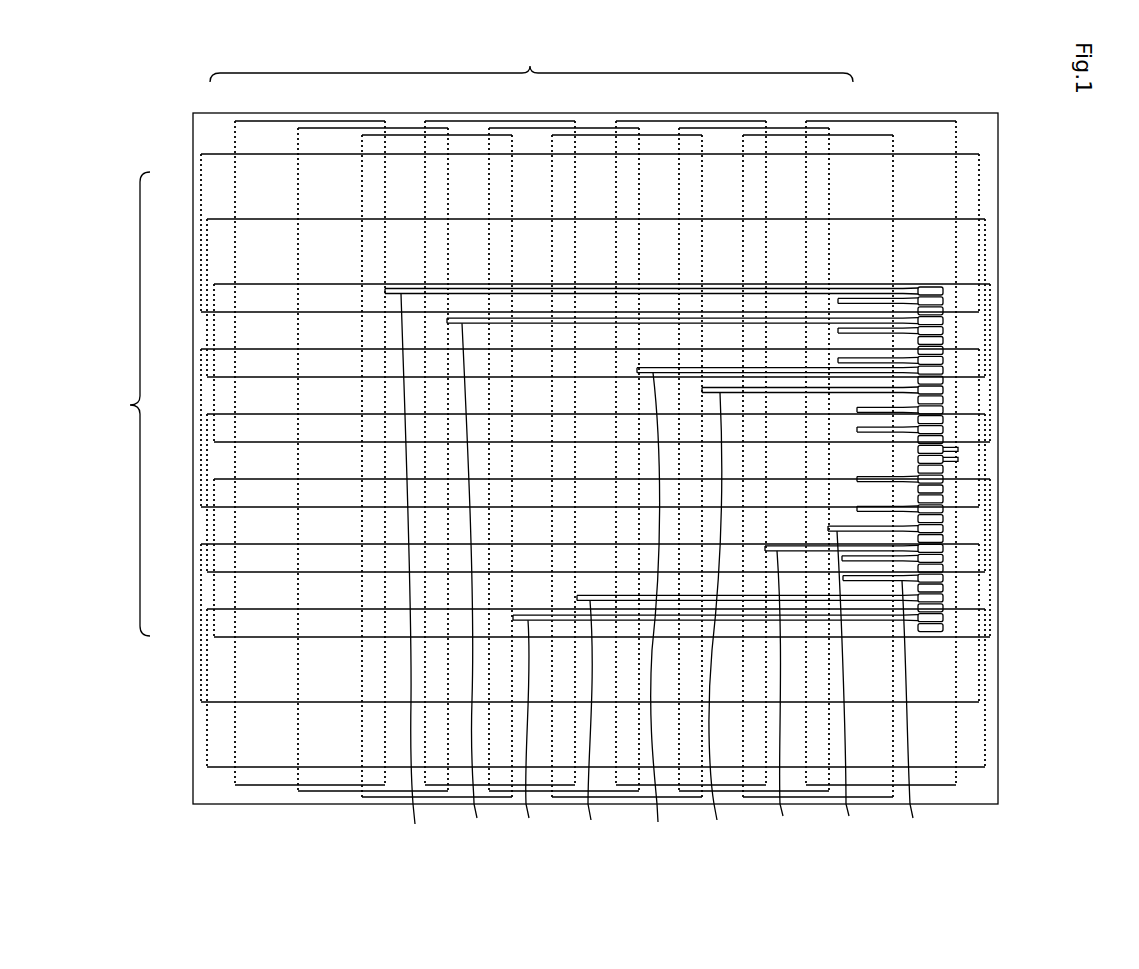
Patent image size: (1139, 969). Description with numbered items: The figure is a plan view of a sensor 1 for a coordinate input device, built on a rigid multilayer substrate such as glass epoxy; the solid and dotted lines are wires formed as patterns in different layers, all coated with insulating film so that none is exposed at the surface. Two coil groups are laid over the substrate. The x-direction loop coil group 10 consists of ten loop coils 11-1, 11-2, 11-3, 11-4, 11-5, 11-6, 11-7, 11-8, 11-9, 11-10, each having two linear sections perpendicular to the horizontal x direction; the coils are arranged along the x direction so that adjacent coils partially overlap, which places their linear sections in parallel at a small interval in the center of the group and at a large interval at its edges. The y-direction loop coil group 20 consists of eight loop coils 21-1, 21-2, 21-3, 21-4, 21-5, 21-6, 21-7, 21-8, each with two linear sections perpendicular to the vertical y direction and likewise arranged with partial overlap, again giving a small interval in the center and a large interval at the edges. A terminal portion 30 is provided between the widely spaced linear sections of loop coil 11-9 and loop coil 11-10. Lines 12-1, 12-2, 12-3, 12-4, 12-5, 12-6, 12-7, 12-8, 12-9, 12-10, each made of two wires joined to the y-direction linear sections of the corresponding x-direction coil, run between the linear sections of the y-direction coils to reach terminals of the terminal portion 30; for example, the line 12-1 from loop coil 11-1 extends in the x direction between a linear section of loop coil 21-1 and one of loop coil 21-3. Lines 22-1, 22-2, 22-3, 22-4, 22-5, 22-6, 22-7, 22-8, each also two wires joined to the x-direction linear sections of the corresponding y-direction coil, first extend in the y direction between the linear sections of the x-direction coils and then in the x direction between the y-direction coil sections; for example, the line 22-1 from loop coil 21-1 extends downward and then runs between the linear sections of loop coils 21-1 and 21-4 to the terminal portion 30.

The sensor 1 is at (1000, 154).
The x-direction loop coil group 10 is at (532, 65).
The loop coil 11-1 is at (245, 121).
The loop coil 11-2 is at (330, 128).
The loop coil 11-3 is at (378, 135).
The loop coil 11-4 is at (470, 121).
The loop coil 11-5 is at (563, 128).
The loop coil 11-6 is at (600, 135).
The loop coil 11-7 is at (640, 121).
The loop coil 11-8 is at (695, 128).
The loop coil 11-9 is at (780, 135).
The loop coil 11-10 is at (852, 121).
The line 12-1 is at (651, 565).
The line 12-2 is at (484, 579).
The line 12-3 is at (715, 724).
The line 12-4 is at (747, 717).
The line 12-5 is at (777, 603).
The line 12-6 is at (810, 610).
The line 12-7 is at (841, 687).
The line 12-8 is at (873, 678).
The line 12-9 is at (958, 460).
The line 12-10 is at (958, 449).
The y-direction loop coil group 20 is at (124, 401).
The loop coil 21-1 is at (203, 172).
The loop coil 21-2 is at (209, 232).
The loop coil 21-3 is at (216, 313).
The loop coil 21-4 is at (203, 357).
The loop coil 21-5 is at (209, 432).
The loop coil 21-6 is at (216, 507).
The loop coil 21-7 is at (203, 563).
The loop coil 21-8 is at (209, 630).
The line 22-1 is at (945, 320).
The line 22-2 is at (945, 360).
The line 22-3 is at (945, 430).
The line 22-4 is at (945, 511).
The line 22-5 is at (945, 410).
The line 22-6 is at (945, 481).
The line 22-7 is at (945, 560).
The line 22-8 is at (898, 704).
The terminal portion 30 is at (947, 254).